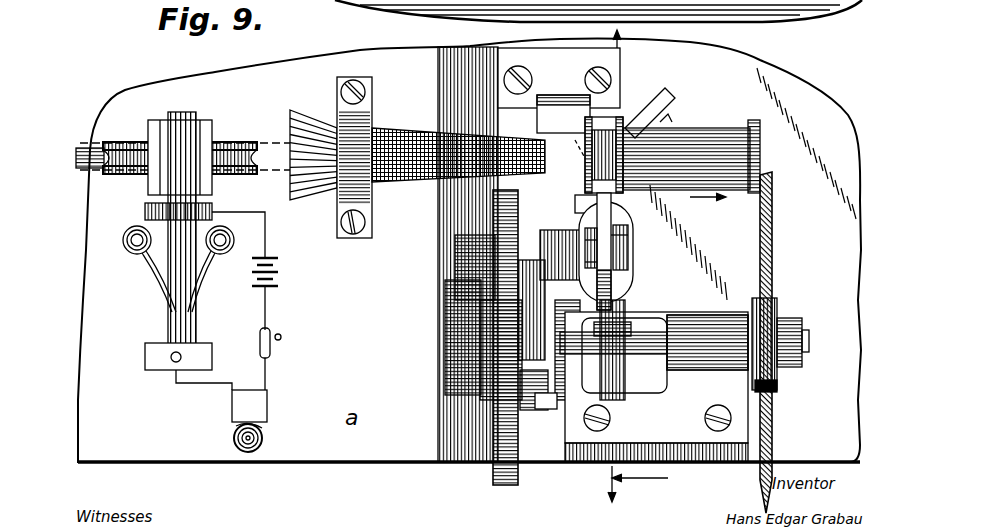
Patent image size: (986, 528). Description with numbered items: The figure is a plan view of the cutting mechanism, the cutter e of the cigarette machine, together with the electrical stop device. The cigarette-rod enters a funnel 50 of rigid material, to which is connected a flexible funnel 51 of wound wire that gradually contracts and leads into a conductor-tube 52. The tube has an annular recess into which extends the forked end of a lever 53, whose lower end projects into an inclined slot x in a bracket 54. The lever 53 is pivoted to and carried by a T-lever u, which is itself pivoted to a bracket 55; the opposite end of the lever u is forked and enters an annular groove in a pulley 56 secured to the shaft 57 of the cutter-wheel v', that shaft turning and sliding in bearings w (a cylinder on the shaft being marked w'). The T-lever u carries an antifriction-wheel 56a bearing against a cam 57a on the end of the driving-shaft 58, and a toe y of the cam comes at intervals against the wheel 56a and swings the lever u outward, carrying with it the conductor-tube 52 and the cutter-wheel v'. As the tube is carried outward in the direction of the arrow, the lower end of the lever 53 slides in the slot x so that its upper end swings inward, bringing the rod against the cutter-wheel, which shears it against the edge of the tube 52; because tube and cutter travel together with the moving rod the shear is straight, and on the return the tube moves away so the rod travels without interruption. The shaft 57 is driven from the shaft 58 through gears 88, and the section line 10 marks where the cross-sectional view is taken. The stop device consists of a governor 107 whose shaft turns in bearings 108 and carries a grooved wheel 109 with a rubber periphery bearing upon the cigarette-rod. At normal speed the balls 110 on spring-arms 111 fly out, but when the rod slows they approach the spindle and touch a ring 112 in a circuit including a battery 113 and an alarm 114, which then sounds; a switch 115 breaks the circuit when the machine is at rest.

The section line 10 10 is at (635, 494).
The funnel 50 is at (303, 115).
The flexible funnel 51 is at (400, 128).
The conductor-tube 52 is at (720, 129).
The lever 53 is at (612, 125).
The bracket 54 is at (568, 140).
The bracket 55 is at (630, 280).
The pulley 56 is at (624, 372).
The antifriction-wheel 56a is at (592, 198).
The shaft 57 is at (640, 333).
The cam 57a is at (528, 402).
The driving-shaft 58 is at (437, 322).
The gears 88 is at (488, 385).
The governor 107 is at (214, 281).
The bearings 108 is at (212, 184).
The grooved wheel 109 is at (245, 142).
The balls 110 is at (124, 235).
The spring-arms 111 is at (160, 295).
The ring 112 is at (145, 210).
The battery 113 is at (268, 271).
The alarm 114 is at (267, 410).
The switch 115 is at (260, 346).
The cutter e is at (688, 242).
The T-lever u is at (620, 262).
The bearings w is at (656, 387).
The cylinder w' is at (707, 328).
The cutter-wheel v' is at (775, 342).
The inclined slot x is at (678, 112).
The toe y is at (548, 400).